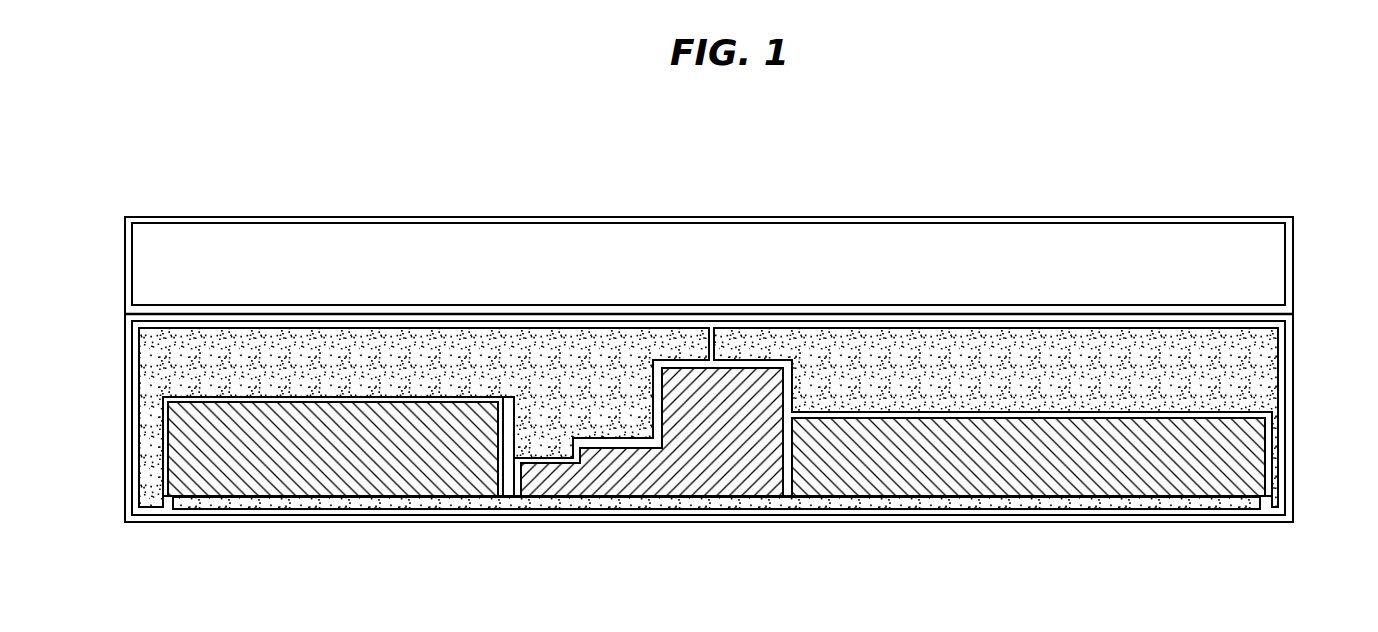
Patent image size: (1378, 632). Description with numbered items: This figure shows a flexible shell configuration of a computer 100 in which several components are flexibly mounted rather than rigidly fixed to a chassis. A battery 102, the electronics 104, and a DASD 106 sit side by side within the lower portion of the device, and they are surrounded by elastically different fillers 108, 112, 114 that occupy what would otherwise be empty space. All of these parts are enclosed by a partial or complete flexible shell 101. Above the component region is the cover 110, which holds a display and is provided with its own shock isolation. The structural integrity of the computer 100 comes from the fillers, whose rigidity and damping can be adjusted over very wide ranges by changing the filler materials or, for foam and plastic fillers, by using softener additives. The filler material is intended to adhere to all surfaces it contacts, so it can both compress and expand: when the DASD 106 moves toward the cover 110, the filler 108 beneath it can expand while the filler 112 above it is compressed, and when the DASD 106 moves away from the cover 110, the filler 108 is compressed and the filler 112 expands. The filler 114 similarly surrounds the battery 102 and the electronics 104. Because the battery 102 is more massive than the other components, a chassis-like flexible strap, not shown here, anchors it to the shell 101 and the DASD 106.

The computer 100 is at (955, 131).
The flexible shell 101 is at (127, 447).
The battery 102 is at (317, 490).
The electronics 104 is at (679, 488).
The DASD 106 is at (1257, 450).
The filler 108 is at (1153, 502).
The cover 110 is at (1175, 222).
The filler 112 is at (1270, 363).
The filler 114 is at (153, 362).